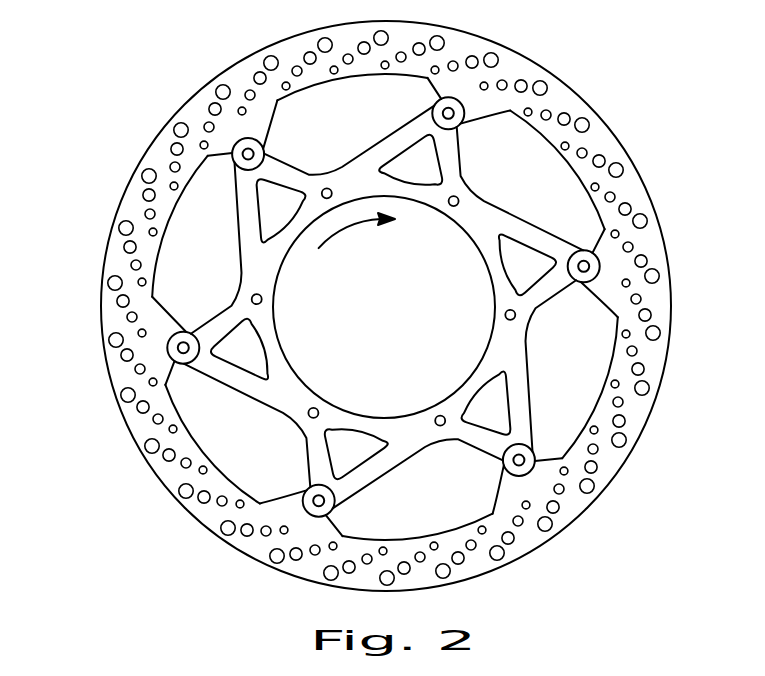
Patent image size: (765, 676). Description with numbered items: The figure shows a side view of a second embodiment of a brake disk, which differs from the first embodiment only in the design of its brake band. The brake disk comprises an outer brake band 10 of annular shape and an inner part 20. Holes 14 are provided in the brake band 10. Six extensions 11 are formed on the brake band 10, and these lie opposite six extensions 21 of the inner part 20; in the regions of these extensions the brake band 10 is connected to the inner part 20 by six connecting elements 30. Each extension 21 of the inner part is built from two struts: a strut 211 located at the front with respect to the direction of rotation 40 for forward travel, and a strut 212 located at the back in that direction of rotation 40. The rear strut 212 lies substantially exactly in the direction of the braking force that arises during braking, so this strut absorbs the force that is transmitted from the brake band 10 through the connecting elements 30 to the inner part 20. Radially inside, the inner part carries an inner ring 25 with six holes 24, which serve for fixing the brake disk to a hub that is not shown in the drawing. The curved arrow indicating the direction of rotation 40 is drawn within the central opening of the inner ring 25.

The brake band 10 is at (653, 347).
The extensions 11 is at (477, 110).
The holes 14 is at (551, 527).
The inner part 20 is at (263, 278).
The extensions 21 is at (540, 237).
The strut 211 is at (213, 317).
The strut 212 is at (223, 380).
The holes 24 is at (452, 206).
The inner ring 25 is at (497, 352).
The connecting elements 30 is at (600, 267).
The direction of rotation 40 is at (328, 240).